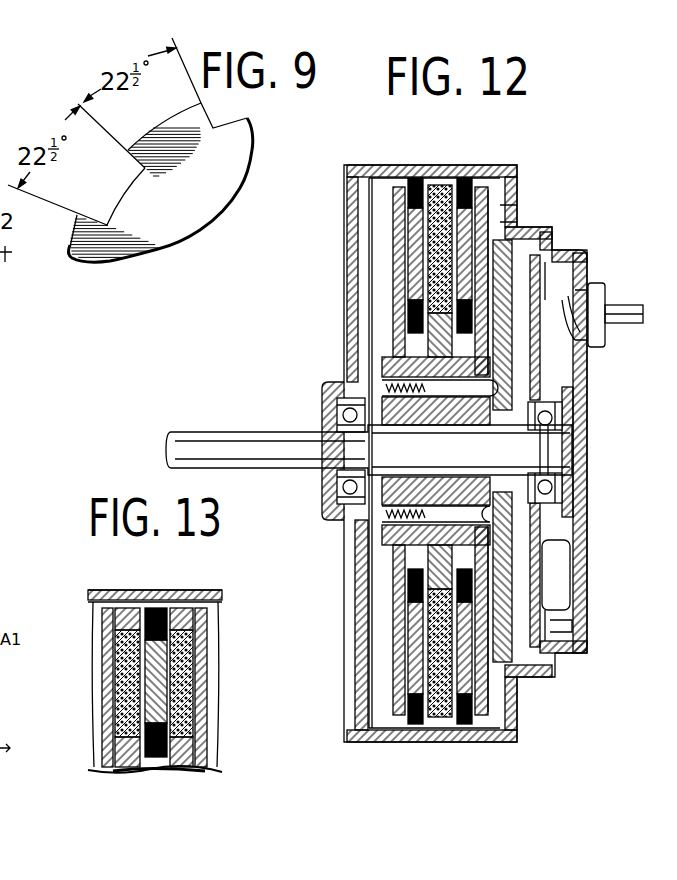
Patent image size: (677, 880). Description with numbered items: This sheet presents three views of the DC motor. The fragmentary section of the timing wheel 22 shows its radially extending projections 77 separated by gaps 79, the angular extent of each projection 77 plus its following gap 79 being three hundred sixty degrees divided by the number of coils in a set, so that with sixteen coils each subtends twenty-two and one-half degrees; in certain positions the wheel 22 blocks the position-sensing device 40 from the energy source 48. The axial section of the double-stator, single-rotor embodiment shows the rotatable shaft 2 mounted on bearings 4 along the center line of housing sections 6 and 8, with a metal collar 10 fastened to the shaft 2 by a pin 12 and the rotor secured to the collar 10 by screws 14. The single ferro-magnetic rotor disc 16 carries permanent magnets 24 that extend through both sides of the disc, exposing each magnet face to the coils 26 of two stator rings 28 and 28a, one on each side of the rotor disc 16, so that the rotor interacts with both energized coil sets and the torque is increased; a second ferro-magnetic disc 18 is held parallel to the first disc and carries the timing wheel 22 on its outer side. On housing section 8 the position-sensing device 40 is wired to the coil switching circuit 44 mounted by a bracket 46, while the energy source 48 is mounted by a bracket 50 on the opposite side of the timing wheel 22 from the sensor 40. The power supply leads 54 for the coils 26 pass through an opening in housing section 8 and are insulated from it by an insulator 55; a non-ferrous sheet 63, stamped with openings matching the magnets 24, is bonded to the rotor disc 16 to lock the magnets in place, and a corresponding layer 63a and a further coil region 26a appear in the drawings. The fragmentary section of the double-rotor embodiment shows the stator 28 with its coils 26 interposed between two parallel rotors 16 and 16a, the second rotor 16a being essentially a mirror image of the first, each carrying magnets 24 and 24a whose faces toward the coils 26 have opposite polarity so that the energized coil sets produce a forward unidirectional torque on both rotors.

In FIG. 12, the rotatable shaft 2 is at (208, 432).
In FIG. 12, the bearings 4 is at (583, 418).
In FIG. 12, the housing section 6 is at (348, 742).
In FIG. 13, the housing section 6 is at (94, 592).
In FIG. 12, the housing section 8 is at (518, 712).
In FIG. 12, the metal collar 10 is at (350, 550).
In FIG. 12, the pin 12 is at (530, 495).
In FIG. 12, the screws 14 is at (507, 378).
In FIG. 12, the first ferro-magnetic circular disc 16 is at (383, 337).
In FIG. 13, the first ferro-magnetic circular disc 16 is at (108, 616).
In FIG. 13, the second rotor 16a is at (205, 615).
In FIG. 12, the second ferro-magnetic circular disc 18 is at (500, 197).
In FIG. 9, the timing wheel 22 is at (153, 232).
In FIG. 12, the timing wheel 22 is at (555, 657).
In FIG. 12, the permanent magnets 24 is at (440, 248).
In FIG. 13, the permanent magnets 24 is at (125, 682).
In FIG. 13, the magnets 24a is at (185, 672).
In FIG. 12, the coils 26 is at (372, 196).
In FIG. 13, the coils 26 is at (95, 762).
In FIG. 12, the stator cup end 26a is at (505, 170).
In FIG. 12, the stator ring 28 is at (415, 178).
In FIG. 13, the stator ring 28 is at (160, 596).
In FIG. 12, the second stator ring 28a is at (466, 178).
In FIG. 12, the position-sensing device 40 is at (530, 255).
In FIG. 12, the coil switching circuit 44 is at (553, 580).
In FIG. 12, the bracket 46 is at (560, 626).
In FIG. 12, the energy source 48 is at (553, 236).
In FIG. 12, the bracket 50 is at (505, 218).
In FIG. 12, the power supply leads 54 is at (624, 318).
In FIG. 12, the insulator 55 is at (595, 290).
In FIG. 13, the sheet 63 is at (116, 596).
In FIG. 13, the bottom plate 63a is at (193, 772).
In FIG. 9, the radially extending projections 77 is at (186, 110).
In FIG. 9, the gaps 79 is at (246, 118).